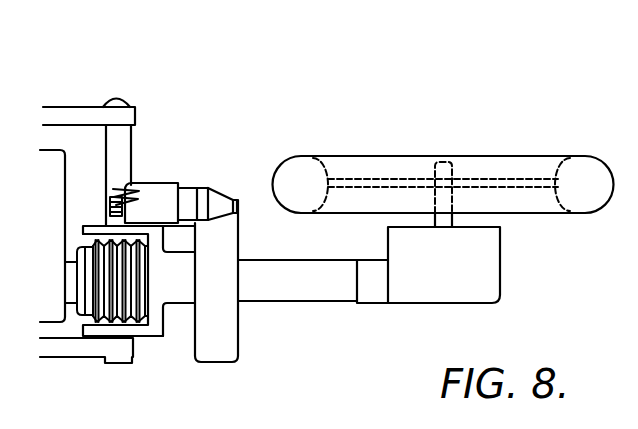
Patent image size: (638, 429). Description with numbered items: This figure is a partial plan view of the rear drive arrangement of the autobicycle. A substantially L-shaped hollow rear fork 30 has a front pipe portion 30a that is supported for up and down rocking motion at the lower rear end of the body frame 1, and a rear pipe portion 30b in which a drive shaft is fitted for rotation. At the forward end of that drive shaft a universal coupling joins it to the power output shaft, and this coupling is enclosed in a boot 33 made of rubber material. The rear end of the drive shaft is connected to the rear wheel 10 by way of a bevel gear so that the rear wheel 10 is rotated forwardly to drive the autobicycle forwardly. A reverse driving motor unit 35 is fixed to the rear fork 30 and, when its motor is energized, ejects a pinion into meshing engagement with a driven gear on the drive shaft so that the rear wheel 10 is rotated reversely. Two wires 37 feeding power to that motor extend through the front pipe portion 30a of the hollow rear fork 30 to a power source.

The body frame 1 is at (75, 120).
The rear wheel 10 is at (555, 155).
The rear fork 30 is at (159, 338).
The front pipe portion 30a is at (122, 150).
The rear pipe portion 30b is at (300, 293).
The boot 33 is at (86, 316).
The reverse driving motor unit 35 is at (182, 176).
The wires 37 is at (110, 204).